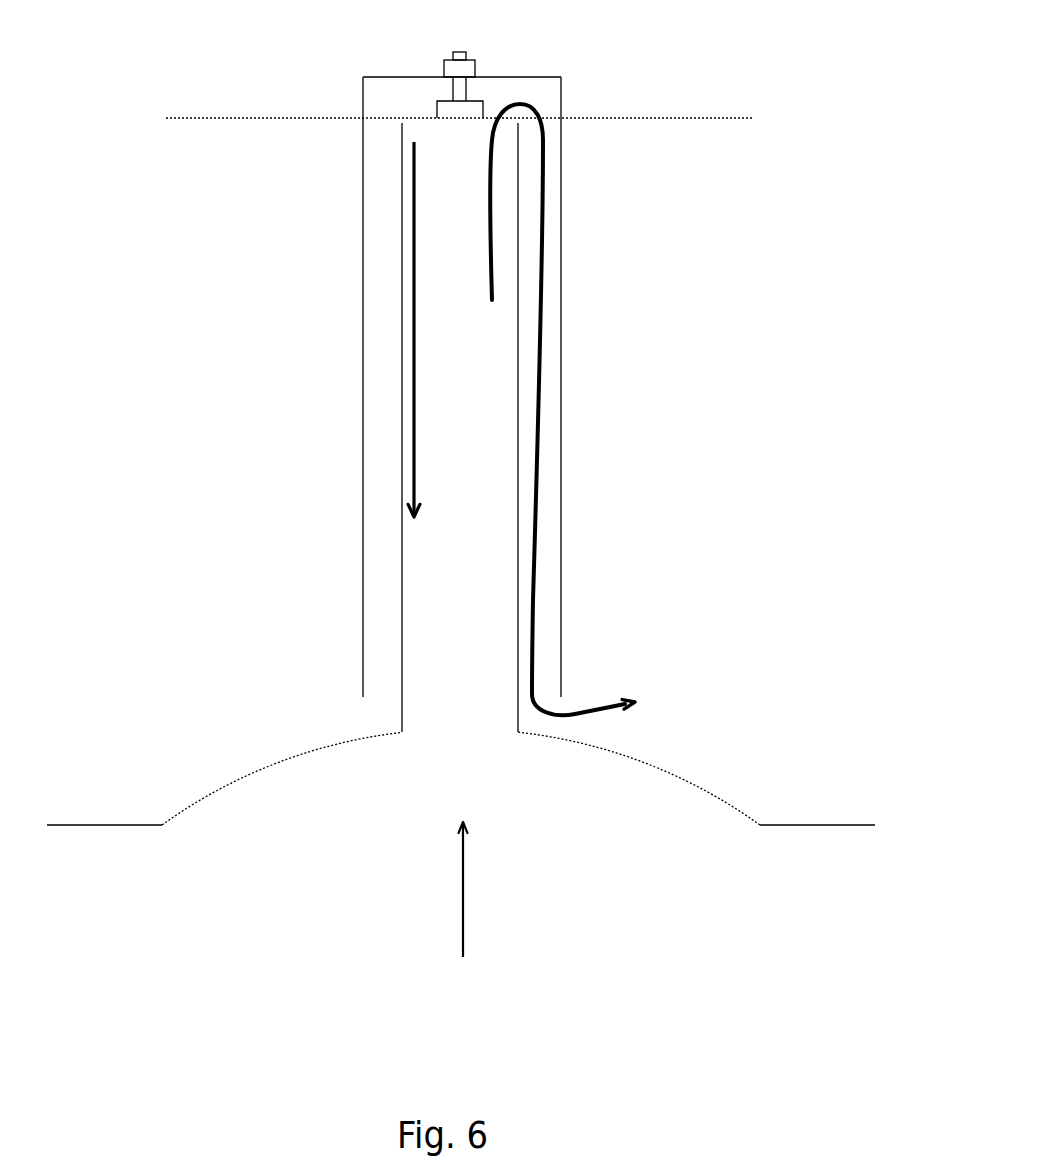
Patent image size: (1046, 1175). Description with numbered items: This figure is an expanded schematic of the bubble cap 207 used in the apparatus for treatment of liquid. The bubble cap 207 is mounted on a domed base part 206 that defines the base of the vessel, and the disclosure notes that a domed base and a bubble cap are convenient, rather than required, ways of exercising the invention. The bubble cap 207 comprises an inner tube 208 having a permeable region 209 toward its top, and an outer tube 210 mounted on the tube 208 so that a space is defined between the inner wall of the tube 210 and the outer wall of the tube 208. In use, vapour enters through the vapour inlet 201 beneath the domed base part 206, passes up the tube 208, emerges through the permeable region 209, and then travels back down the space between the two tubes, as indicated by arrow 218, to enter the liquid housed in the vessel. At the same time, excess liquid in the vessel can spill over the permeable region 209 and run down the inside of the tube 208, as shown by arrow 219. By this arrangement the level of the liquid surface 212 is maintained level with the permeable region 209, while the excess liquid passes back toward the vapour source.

The vapour inlet 201 is at (465, 913).
The domed base part 206 is at (296, 761).
The bubble cap 207 is at (563, 77).
The tube 208 is at (401, 349).
The permeable region 209 is at (412, 116).
The tube 210 is at (563, 314).
The liquid surface 212 is at (238, 119).
The arrow 218 is at (588, 409).
The arrow 219 is at (438, 339).